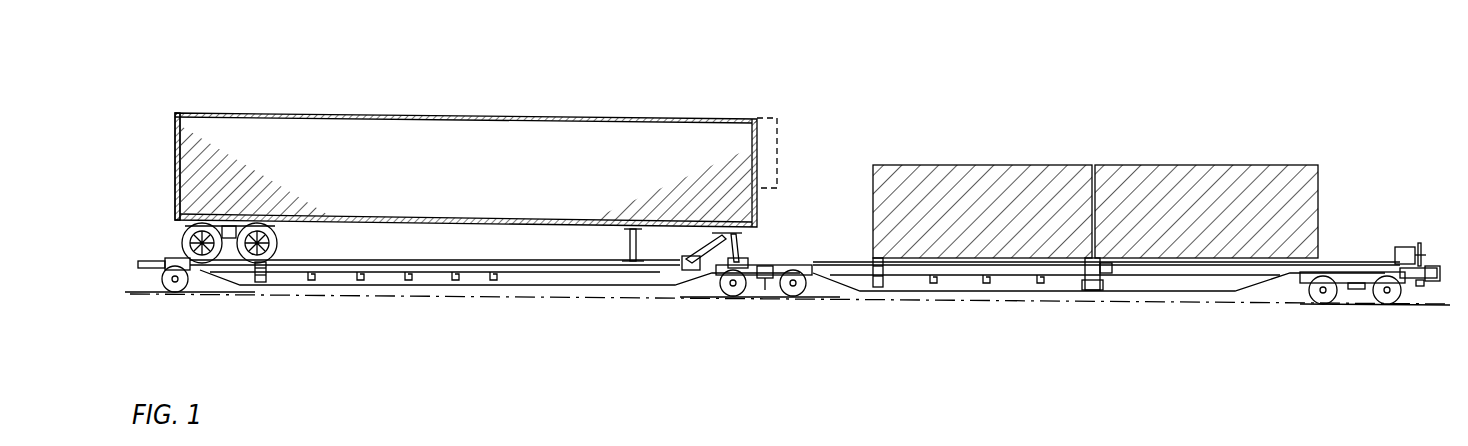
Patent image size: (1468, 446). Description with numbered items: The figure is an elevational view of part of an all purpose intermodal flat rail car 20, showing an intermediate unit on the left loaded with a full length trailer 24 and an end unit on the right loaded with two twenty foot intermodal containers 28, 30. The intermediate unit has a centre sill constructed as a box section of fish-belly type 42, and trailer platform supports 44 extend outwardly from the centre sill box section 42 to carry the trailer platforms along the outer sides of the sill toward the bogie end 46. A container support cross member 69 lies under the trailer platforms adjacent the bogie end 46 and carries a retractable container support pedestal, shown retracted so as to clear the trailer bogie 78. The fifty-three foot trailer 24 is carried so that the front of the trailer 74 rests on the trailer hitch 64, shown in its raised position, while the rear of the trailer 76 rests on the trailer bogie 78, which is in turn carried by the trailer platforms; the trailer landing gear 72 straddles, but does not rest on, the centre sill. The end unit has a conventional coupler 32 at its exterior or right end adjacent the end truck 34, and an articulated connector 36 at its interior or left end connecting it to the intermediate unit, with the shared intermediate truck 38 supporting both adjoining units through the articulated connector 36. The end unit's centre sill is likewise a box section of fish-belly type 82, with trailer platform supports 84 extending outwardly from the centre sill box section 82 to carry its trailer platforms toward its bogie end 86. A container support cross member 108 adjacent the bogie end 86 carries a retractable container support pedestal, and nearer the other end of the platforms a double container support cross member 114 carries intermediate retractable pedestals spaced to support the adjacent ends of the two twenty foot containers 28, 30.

The all purpose intermodal flat rail car 20 is at (820, 100).
The full length trailer 24 is at (421, 113).
The intermodal container 28 is at (980, 165).
The intermodal container 30 is at (1203, 165).
The coupler 32 is at (1438, 279).
The end truck 34 is at (1367, 293).
The articulated connector 36 is at (762, 286).
The shared intermediate truck 38 is at (770, 290).
The centre sill box section 42 is at (601, 278).
The trailer platform supports 44 is at (410, 277).
The bogie end 46 is at (157, 256).
The trailer hitch 64 is at (732, 247).
The container support cross member 69 is at (248, 283).
The trailer landing gear 72 is at (630, 242).
The front of the trailer 74 is at (760, 141).
The rear of the trailer 76 is at (173, 132).
The trailer bogie 78 is at (278, 244).
The centre sill box section 82 is at (1145, 283).
The trailer platform supports 84 is at (930, 280).
The bogie end 86 is at (842, 190).
The container support cross member 108 is at (870, 283).
The double container support cross member 114 is at (1080, 283).